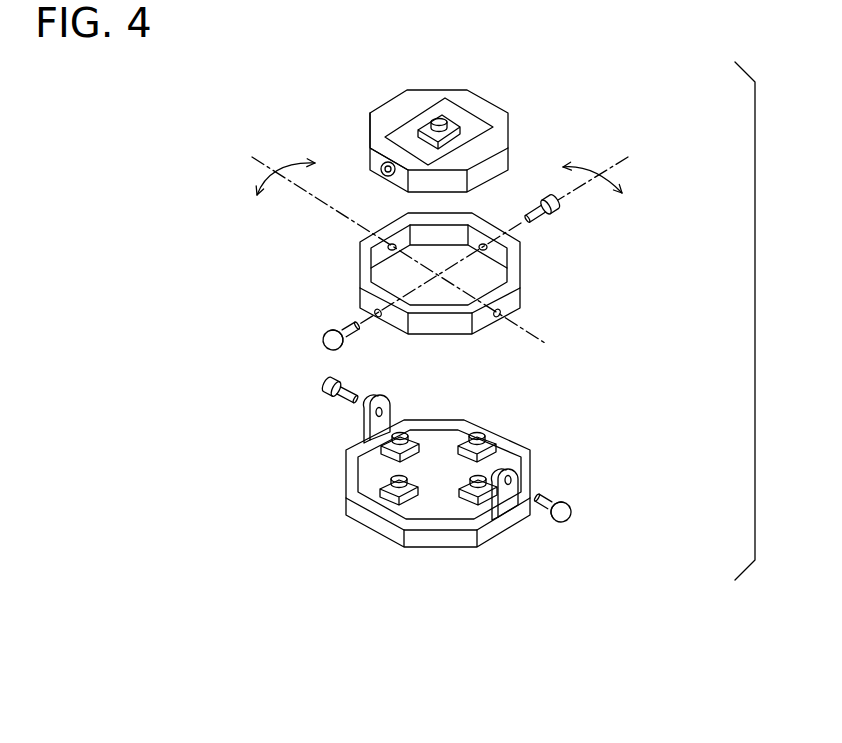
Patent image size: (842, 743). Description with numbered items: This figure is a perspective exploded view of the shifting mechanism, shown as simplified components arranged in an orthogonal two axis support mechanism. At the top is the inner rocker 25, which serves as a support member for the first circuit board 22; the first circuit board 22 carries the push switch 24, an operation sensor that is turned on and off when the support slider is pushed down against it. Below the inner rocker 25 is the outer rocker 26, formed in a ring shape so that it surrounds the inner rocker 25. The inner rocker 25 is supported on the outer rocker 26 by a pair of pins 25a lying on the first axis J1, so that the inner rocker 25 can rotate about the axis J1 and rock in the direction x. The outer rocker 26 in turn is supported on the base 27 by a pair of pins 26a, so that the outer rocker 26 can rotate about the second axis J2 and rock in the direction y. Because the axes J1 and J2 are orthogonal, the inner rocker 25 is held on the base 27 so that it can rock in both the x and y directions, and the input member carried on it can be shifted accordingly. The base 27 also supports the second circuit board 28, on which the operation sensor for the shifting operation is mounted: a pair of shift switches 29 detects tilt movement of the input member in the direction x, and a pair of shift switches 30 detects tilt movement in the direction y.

The first circuit board 22 is at (407, 128).
The push switch 24 is at (439, 118).
The inner rocker 25 is at (483, 110).
The pins 25a is at (530, 202).
The outer rocker 26 is at (516, 266).
The pins 26a is at (330, 378).
The base 27 is at (519, 442).
The second circuit board 28 is at (375, 472).
The shift switches 29 is at (415, 443).
The shift switches 30 is at (464, 443).
The first axis J1 is at (506, 228).
The second axis J2 is at (385, 236).